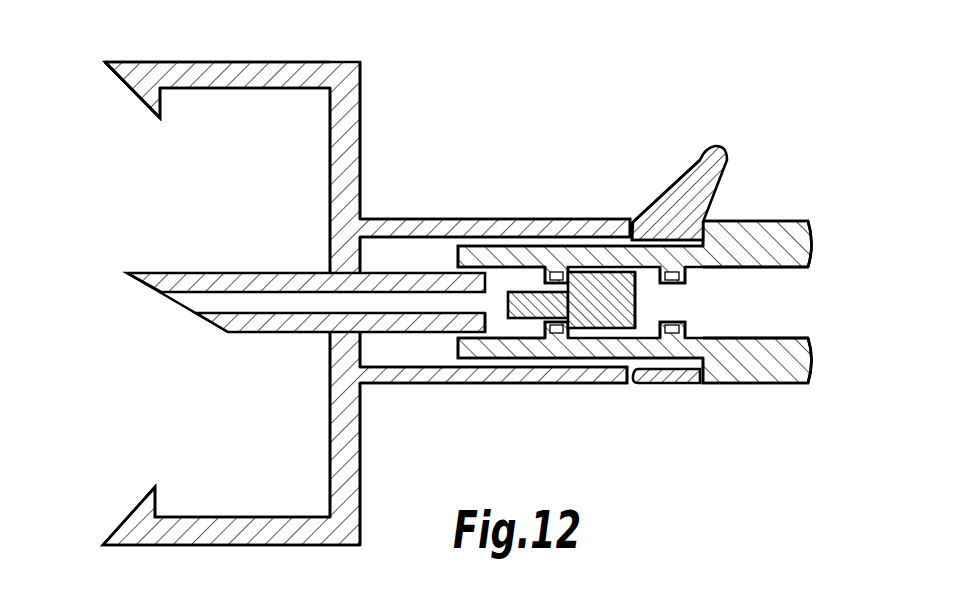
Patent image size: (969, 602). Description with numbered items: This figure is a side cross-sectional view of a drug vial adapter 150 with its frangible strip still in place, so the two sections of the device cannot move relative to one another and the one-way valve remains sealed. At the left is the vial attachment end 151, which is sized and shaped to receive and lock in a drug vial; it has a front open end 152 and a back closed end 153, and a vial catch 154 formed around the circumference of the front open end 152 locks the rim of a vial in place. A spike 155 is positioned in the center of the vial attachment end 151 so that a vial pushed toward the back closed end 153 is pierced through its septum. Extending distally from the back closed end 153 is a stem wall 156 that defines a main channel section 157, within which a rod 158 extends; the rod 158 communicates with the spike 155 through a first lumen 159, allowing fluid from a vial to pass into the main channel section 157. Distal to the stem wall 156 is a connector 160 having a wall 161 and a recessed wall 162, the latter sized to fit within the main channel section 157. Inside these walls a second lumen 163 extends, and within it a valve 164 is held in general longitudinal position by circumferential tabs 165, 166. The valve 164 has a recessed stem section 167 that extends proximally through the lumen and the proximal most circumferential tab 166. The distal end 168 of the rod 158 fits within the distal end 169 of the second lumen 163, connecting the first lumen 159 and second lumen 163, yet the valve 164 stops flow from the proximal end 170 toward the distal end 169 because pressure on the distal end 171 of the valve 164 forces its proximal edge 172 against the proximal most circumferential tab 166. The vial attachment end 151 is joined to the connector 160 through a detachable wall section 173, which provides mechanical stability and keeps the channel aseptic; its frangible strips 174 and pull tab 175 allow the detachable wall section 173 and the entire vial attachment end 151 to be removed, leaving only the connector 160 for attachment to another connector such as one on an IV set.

The drug vial adapter 150 is at (464, 148).
The vial attachment end 151 is at (220, 52).
The front open end 152 is at (115, 130).
The back closed end 153 is at (362, 97).
The vial catch 154 is at (123, 517).
The spike 155 is at (243, 272).
The stem wall 156 is at (492, 385).
The main channel section 157 is at (388, 343).
The rod 158 is at (397, 275).
The first lumen 159 is at (200, 305).
The connector 160 is at (807, 182).
The wall 161 is at (807, 223).
The recessed wall 162 is at (678, 260).
The second lumen 163 is at (790, 296).
The valve 164 is at (608, 305).
The circumferential tab 165 is at (673, 328).
The proximal most circumferential tab 166 is at (555, 325).
The recessed stem section 167 is at (530, 307).
The distal end of the rod 168 is at (458, 322).
The distal end of the second lumen 169 is at (452, 247).
The proximal end of the connector 170 is at (783, 370).
The distal end of the valve 171 is at (637, 303).
The proximal edge of the valve 172 is at (556, 268).
The detachable wall section 173 is at (665, 385).
The frangible strips 174 is at (693, 166).
The pull tab 175 is at (714, 144).